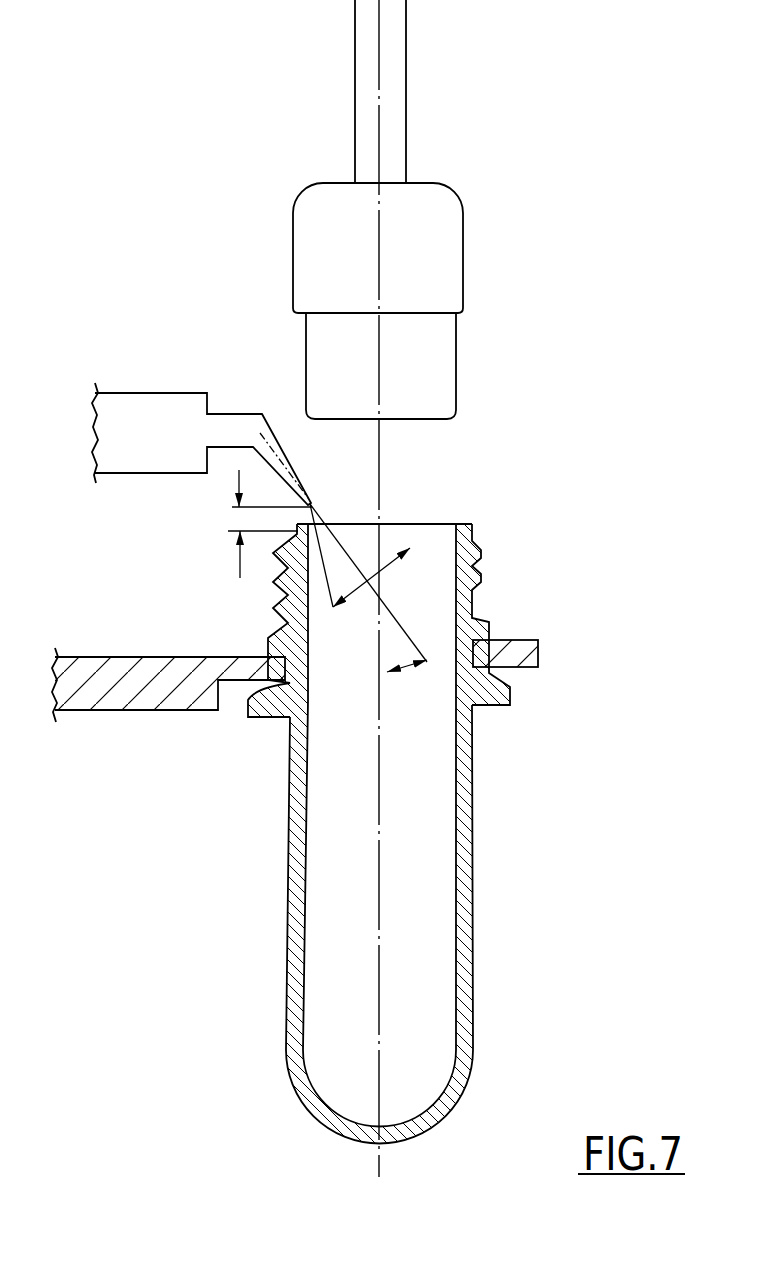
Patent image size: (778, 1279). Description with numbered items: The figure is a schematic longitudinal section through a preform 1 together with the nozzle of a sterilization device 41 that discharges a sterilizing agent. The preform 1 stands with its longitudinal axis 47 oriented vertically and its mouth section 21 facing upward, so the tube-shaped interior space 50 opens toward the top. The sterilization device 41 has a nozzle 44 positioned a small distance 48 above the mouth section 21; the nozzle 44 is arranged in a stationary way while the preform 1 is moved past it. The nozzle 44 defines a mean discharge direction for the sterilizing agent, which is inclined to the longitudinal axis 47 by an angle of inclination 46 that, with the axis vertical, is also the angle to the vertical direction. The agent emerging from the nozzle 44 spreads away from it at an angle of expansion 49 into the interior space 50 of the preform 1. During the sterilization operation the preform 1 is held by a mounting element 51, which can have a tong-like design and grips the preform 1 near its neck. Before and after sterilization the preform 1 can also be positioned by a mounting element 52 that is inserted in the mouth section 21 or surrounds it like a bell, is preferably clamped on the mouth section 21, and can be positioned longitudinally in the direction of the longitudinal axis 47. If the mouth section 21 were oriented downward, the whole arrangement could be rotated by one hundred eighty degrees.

The preform 1 is at (401, 784).
The mouth section 21 is at (467, 538).
The sterilization device 41 is at (341, 361).
The nozzle 44 is at (300, 467).
The angle of inclination 46 is at (405, 680).
The longitudinal axis 47 is at (379, 877).
The small distance 48 is at (237, 522).
The angle of expansion 49 is at (367, 580).
The interior space 50 is at (331, 897).
The mounting element 51 is at (528, 655).
The mounting element 52 is at (443, 252).